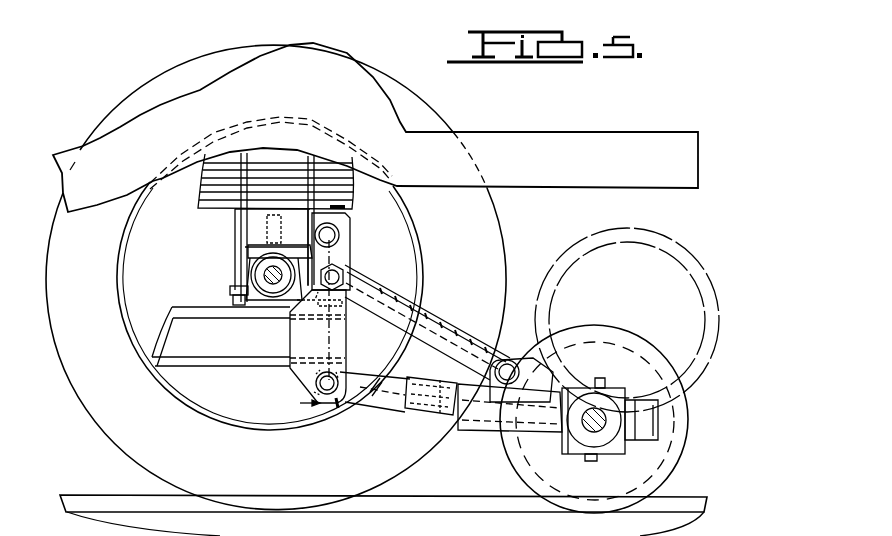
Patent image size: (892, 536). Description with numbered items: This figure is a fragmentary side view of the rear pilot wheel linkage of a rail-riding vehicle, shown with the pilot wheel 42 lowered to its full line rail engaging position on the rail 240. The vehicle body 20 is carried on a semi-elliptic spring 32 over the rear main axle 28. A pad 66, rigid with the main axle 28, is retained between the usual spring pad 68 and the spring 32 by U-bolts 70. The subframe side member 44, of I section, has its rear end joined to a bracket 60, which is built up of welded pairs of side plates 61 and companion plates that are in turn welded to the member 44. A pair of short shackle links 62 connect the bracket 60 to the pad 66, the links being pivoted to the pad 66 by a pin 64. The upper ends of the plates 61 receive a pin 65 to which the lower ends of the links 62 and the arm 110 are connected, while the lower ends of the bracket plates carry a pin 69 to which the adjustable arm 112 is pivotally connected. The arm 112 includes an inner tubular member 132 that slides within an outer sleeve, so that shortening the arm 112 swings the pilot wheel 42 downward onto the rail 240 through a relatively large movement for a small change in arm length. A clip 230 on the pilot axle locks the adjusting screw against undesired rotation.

The body 20 is at (593, 142).
The main axle 28 is at (250, 268).
The semi-elliptic spring 32 is at (271, 175).
The pilot wheel 42 is at (676, 249).
The frame member 44 is at (197, 348).
The bracket 60 is at (340, 332).
The side plate 61 is at (300, 335).
The shackle link 62 is at (343, 250).
The pin 64 is at (350, 230).
The pin 65 is at (348, 275).
The pad 66 is at (237, 216).
The spring pad 68 is at (250, 249).
The pin 69 is at (333, 378).
The U-bolt 70 is at (203, 205).
The arm 110 is at (440, 318).
The adjustable arm 112 is at (385, 410).
The inner tubular member 132 is at (366, 410).
The clip 230 is at (627, 418).
The rail 240 is at (667, 505).